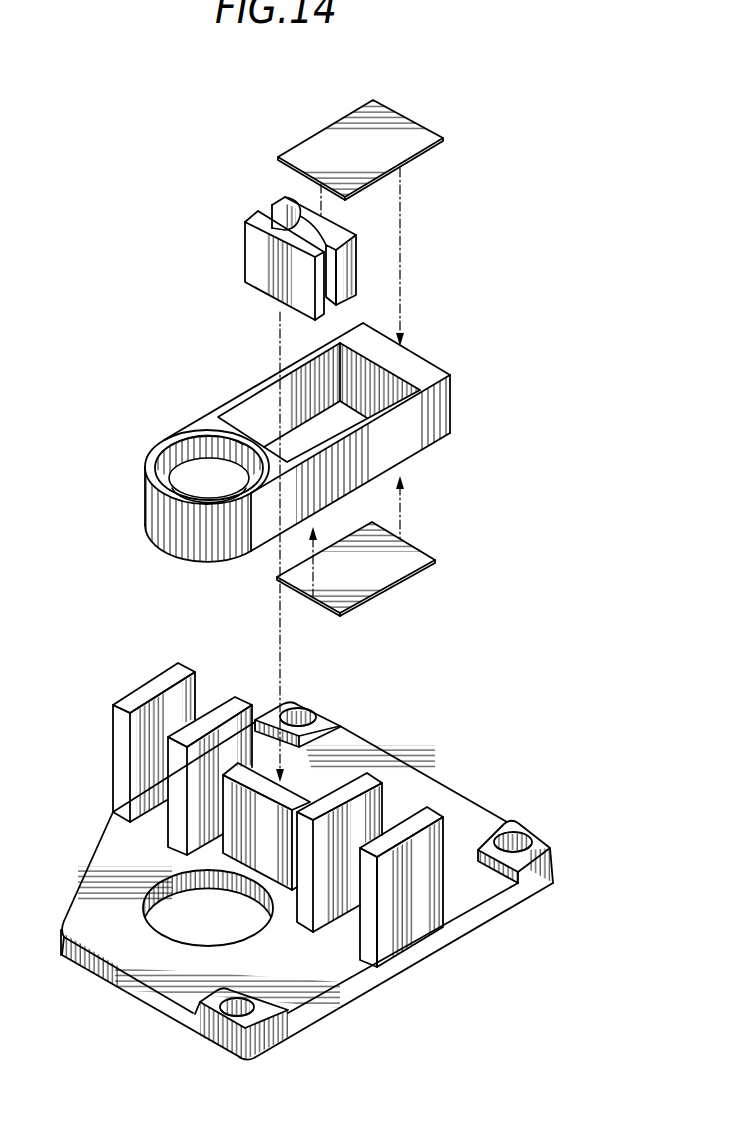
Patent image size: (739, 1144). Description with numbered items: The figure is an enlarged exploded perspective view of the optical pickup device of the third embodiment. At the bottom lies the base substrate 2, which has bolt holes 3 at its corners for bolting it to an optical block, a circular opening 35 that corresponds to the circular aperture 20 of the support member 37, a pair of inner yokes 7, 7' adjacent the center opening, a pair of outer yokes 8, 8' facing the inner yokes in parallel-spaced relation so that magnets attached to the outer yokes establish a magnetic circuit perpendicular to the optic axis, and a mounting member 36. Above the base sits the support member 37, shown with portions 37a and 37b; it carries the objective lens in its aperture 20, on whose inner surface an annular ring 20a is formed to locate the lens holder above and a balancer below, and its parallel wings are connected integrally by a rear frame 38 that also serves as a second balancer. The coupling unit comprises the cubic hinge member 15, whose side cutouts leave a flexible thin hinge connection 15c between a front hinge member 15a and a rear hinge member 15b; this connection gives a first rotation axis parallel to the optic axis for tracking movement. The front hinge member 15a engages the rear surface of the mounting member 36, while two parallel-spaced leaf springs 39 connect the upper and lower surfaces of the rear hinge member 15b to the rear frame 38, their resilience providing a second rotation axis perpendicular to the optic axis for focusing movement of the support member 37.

The base substrate 2 is at (307, 850).
The bolt holes 3 is at (305, 717).
The inner yoke 7 is at (215, 753).
The inner yoke 7' is at (374, 837).
The outer yoke 8 is at (154, 723).
The outer yoke 8' is at (443, 887).
The hinge member 15 is at (324, 250).
The front hinge member 15a is at (266, 284).
The rear hinge member 15b is at (355, 273).
The hinge connection 15c is at (300, 216).
The aperture 20 is at (187, 441).
The annular ring 20a is at (197, 472).
The circular opening 35 is at (197, 934).
The mounting member 36 is at (253, 852).
The support member 37 is at (293, 442).
The top face of bearing block 37a is at (205, 423).
The side face of bearing block 37b is at (413, 453).
The rear frame 38 is at (420, 363).
The leaf springs 39 is at (402, 130).